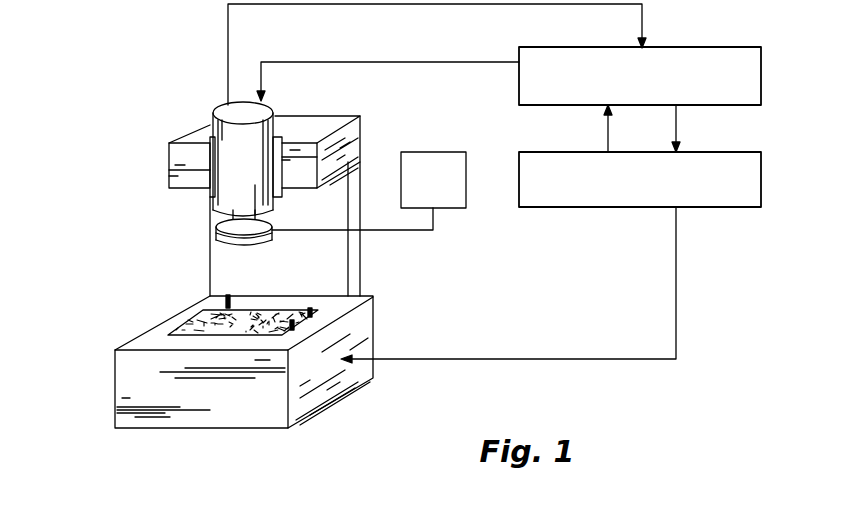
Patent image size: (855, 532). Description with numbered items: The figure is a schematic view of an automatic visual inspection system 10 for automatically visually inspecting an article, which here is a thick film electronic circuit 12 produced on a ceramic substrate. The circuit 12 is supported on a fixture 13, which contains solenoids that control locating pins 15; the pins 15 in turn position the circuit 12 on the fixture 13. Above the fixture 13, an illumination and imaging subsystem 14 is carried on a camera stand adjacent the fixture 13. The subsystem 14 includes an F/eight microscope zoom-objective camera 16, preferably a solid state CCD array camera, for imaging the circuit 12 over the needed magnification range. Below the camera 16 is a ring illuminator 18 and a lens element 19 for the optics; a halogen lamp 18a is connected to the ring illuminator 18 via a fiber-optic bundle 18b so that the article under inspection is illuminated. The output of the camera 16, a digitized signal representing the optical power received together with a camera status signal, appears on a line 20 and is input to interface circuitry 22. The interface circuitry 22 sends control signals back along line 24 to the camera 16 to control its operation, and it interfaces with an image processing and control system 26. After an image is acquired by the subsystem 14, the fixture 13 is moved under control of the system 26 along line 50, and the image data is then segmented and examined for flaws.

The automatic visual inspection system 10 is at (46, 71).
The thick film electronic circuit 12 is at (200, 316).
The fixture 13 is at (330, 403).
The illumination and imaging subsystem 14 is at (211, 124).
The locating pins 15 is at (230, 296).
The microscope zoom-objective camera 16 is at (232, 197).
The ring illuminator 18 is at (227, 243).
The halogen lamp 18a is at (462, 212).
The fiber-optic bundle 18b is at (402, 232).
The lens 19 is at (233, 225).
The line 20 is at (226, 40).
The interface circuitry 22 is at (697, 46).
The line 24 is at (430, 64).
The image processing and control system 26 is at (710, 209).
The line 50 is at (677, 298).